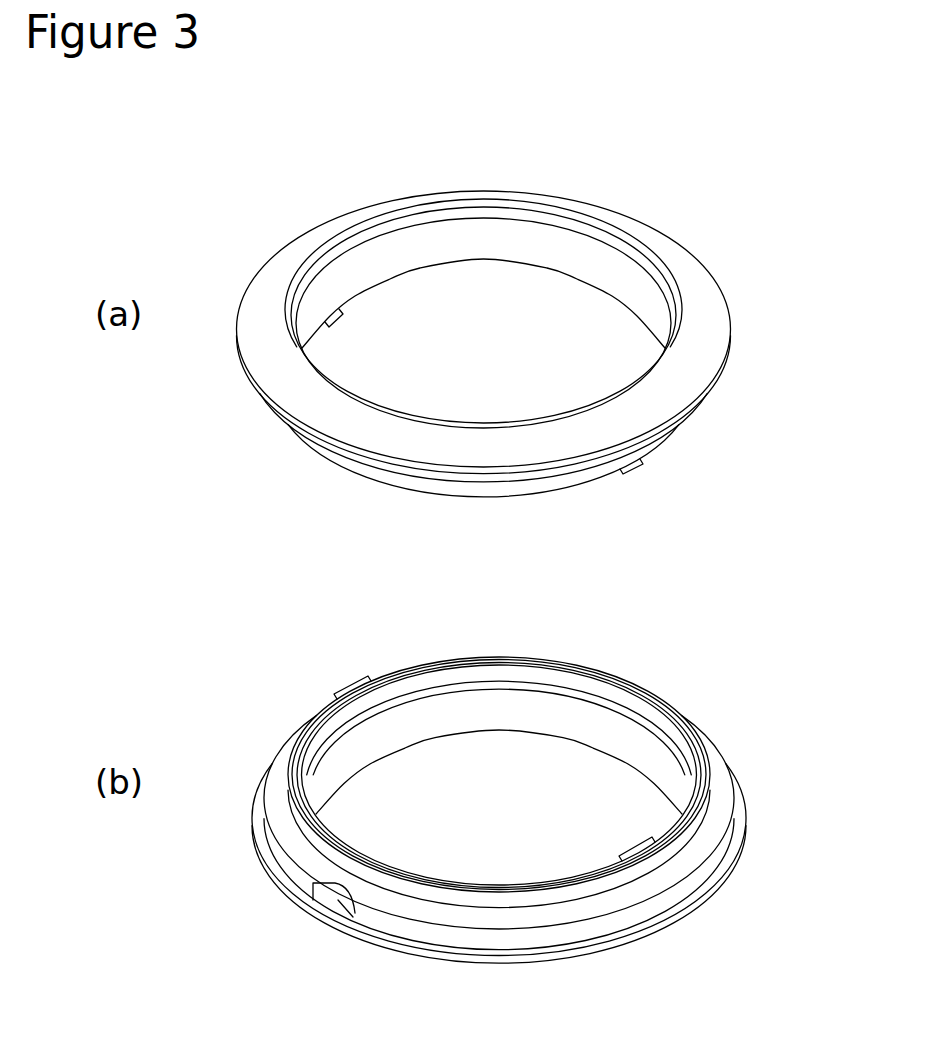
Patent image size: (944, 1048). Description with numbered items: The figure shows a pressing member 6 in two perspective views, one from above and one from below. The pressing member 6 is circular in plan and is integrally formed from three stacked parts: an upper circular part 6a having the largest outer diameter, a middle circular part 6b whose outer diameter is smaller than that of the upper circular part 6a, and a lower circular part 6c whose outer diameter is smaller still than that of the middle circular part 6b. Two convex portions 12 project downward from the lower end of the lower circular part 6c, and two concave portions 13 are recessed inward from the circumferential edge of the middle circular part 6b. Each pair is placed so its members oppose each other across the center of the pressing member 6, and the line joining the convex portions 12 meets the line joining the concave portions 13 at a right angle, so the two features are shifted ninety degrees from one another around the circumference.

The pressing member 6 is at (665, 190).
The upper circular part 6a is at (702, 302).
The middle circular part 6b is at (283, 827).
The lower circular part 6c is at (288, 743).
The convex portions 12 is at (348, 313).
The concave portions 13 is at (335, 885).